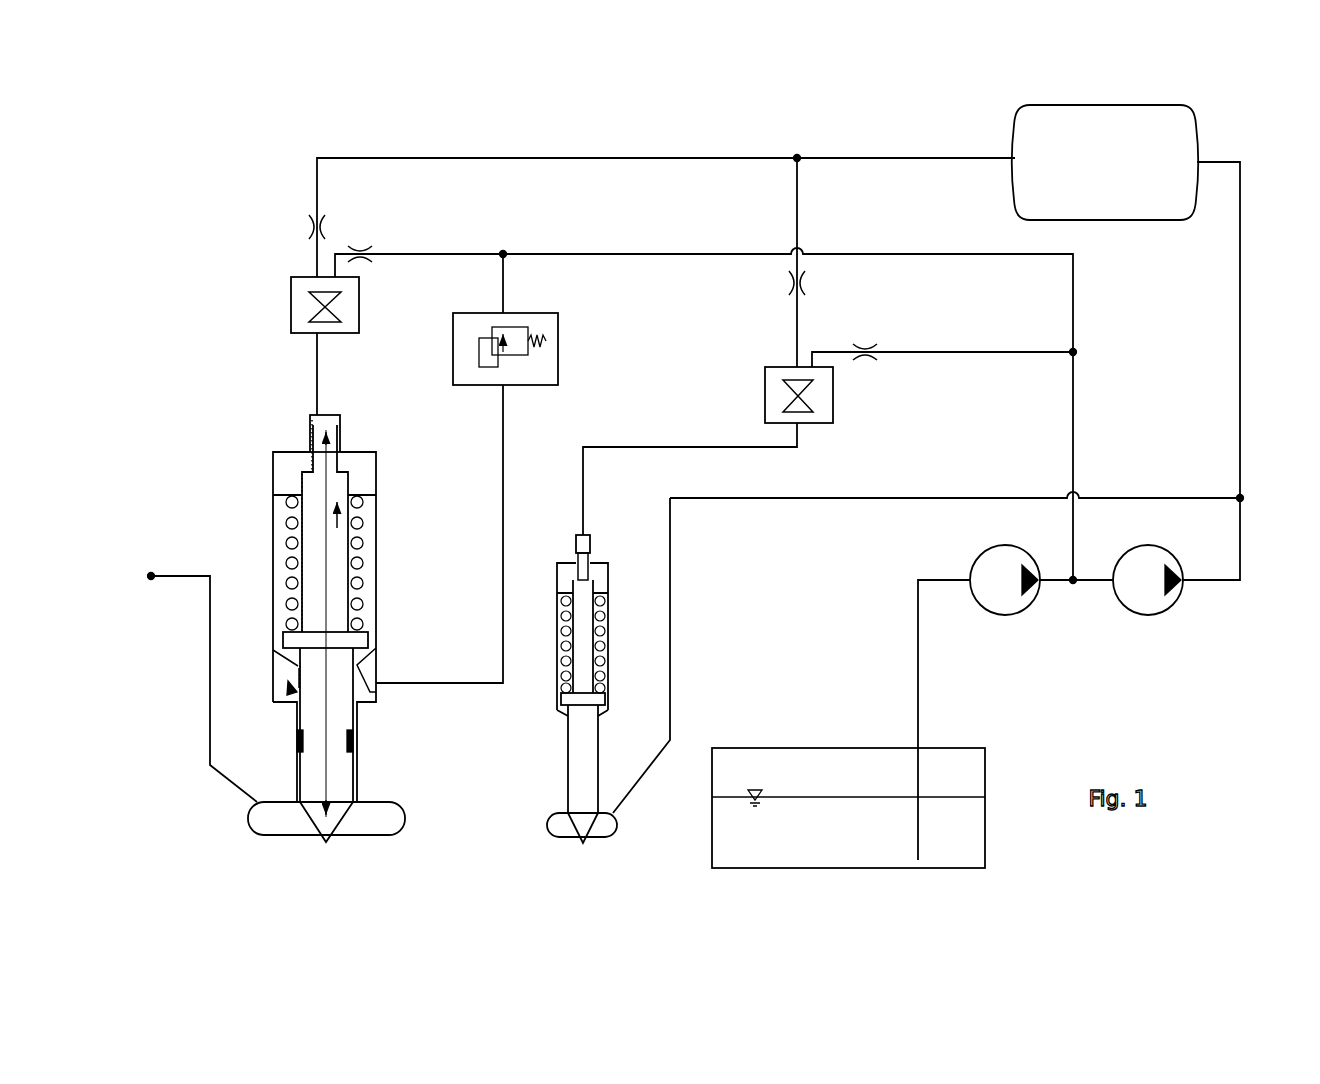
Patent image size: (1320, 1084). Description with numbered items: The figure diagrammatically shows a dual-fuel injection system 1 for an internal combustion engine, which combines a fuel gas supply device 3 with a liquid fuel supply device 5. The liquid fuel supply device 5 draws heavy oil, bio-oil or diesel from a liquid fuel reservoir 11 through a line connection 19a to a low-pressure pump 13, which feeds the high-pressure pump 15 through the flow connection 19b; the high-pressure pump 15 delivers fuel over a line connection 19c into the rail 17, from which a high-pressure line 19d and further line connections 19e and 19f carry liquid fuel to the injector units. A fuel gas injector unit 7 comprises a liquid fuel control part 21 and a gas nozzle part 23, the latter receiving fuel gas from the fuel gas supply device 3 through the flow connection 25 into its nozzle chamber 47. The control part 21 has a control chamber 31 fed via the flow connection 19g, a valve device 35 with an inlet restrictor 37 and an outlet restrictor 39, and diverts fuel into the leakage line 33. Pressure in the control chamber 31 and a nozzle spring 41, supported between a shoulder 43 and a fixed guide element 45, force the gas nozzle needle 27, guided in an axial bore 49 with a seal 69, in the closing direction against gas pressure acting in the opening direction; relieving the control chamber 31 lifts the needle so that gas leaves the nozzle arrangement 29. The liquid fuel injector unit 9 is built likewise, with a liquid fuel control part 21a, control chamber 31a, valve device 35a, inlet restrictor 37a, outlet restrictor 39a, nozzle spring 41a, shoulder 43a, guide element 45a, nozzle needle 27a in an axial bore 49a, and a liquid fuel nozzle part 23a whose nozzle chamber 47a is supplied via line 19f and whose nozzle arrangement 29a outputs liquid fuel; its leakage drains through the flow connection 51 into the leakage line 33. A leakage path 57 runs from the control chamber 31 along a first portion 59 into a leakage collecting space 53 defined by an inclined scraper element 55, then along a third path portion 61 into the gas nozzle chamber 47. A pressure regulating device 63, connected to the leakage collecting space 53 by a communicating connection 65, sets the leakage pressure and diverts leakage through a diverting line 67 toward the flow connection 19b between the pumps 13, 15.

The dual-fuel injection system 1 is at (282, 248).
The fuel gas supply device 3 is at (146, 589).
The liquid fuel supply device 5 is at (1090, 256).
The fuel gas injector unit 7 is at (257, 530).
The liquid fuel injector unit 9 is at (540, 784).
The liquid fuel reservoir 11 is at (793, 834).
The low-pressure pump 13 is at (1000, 600).
The high-pressure pump 15 is at (1152, 603).
The rail 17 is at (1090, 184).
The line connection 19a is at (918, 715).
The flow connection 19b is at (1100, 583).
The line connection 19c is at (1242, 440).
The high-pressure line 19d is at (698, 157).
The line connection 19e is at (798, 228).
The line connection 19f is at (868, 498).
The flow connection of the control part 19g is at (320, 388).
The liquid fuel control part 21 is at (282, 347).
The liquid fuel control part 21a is at (812, 438).
The gas nozzle part 23 is at (367, 810).
The liquid fuel nozzle part 23a is at (605, 825).
The flow connection 25 is at (210, 690).
The gas nozzle needle 27 is at (342, 783).
The nozzle needle 27a is at (580, 768).
The nozzle arrangement 29 is at (333, 838).
The nozzle arrangement 29a is at (577, 843).
The control chamber 31 is at (325, 425).
The control chamber 31a is at (582, 542).
The leakage line 33 is at (400, 253).
The valve device 35 is at (298, 306).
The valve device 35a is at (780, 397).
The inlet restrictor 37 is at (309, 226).
The inlet restrictor 37a is at (790, 287).
The outlet restrictor 39 is at (370, 263).
The outlet restrictor 39a is at (870, 360).
The nozzle spring 41 is at (364, 503).
The nozzle spring 41a is at (600, 631).
The shoulder 43 is at (358, 638).
The shoulder 43a is at (593, 699).
The guide element 45 is at (287, 490).
The guide element 45a is at (565, 593).
The nozzle chamber 47 is at (285, 825).
The nozzle chamber 47a is at (597, 832).
The axial bore 49 is at (295, 763).
The axial bore 49a is at (570, 783).
The flow connection 51 is at (928, 350).
The leakage collecting space 53 is at (370, 670).
The scraper element 55 is at (370, 688).
The leakage path 57 is at (325, 706).
The first portion 59 is at (344, 573).
The third path portion 61 is at (297, 782).
The pressure regulating device 63 is at (547, 358).
The communicating connection 65 is at (500, 498).
The diverting line 67 is at (505, 290).
The seal 69 is at (355, 743).